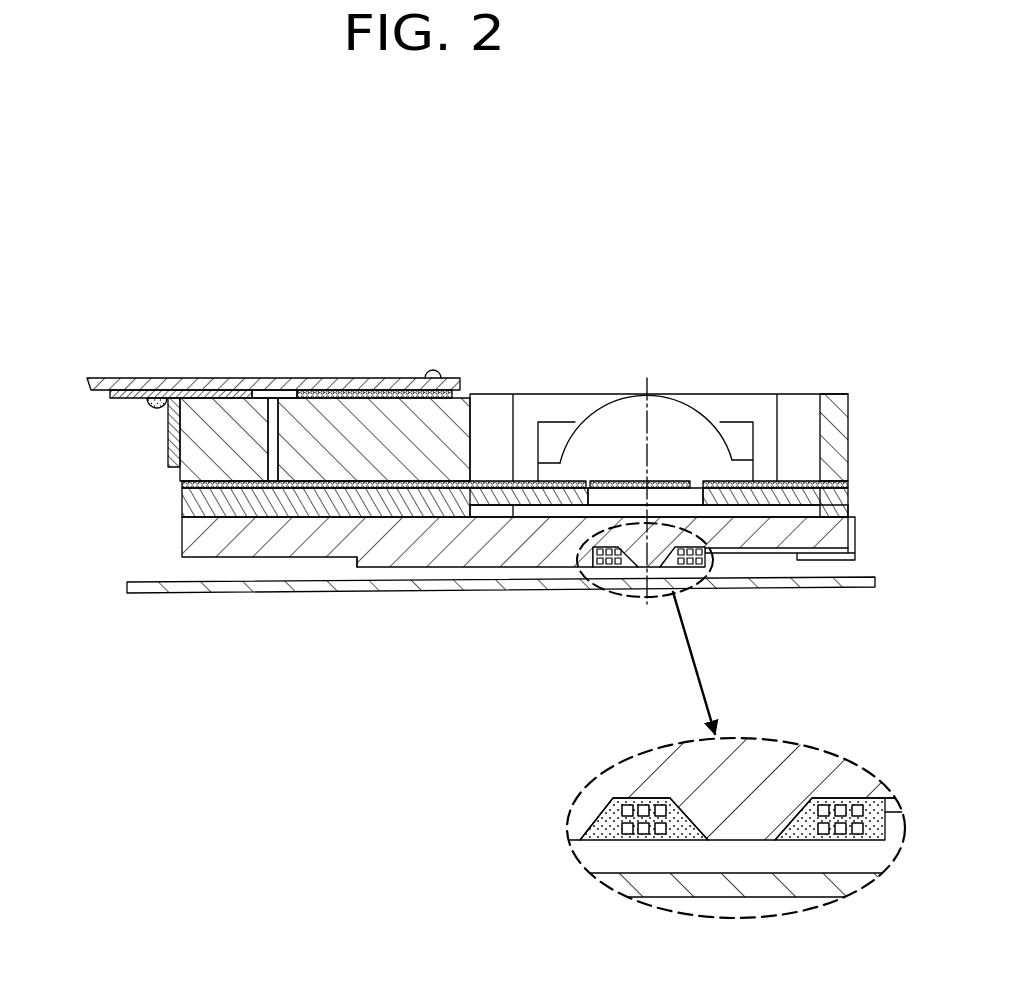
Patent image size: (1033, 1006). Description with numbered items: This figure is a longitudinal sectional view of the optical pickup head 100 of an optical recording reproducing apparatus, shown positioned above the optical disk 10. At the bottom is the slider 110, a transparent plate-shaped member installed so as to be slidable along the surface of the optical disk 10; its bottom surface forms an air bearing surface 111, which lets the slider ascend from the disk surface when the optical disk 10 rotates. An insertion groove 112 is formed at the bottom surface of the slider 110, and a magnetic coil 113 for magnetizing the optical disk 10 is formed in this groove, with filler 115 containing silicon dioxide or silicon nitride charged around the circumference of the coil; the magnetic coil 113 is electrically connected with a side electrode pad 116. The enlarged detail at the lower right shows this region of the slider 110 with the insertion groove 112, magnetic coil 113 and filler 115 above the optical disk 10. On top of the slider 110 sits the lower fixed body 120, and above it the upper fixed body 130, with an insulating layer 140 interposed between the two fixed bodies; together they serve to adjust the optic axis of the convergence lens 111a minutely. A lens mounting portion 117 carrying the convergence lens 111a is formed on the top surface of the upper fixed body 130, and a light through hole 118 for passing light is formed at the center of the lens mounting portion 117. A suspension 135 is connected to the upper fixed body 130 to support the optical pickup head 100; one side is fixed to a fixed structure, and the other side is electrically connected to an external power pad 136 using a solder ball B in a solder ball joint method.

The optical pickup head 100 is at (488, 250).
The optical disk 10 is at (390, 596).
The slider 110 is at (234, 552).
The air bearing surface 111 is at (356, 570).
The convergence lens 111a is at (684, 411).
The insertion groove 112 is at (589, 572).
The magnetic coil 113 is at (608, 572).
The filler 115 is at (665, 572).
The side electrode pad 116 is at (811, 561).
The lens mounting portion 117 is at (733, 432).
The light through hole 118 is at (690, 482).
The lower fixed body 120 is at (184, 511).
The upper fixed body 130 is at (196, 474).
The suspension 135 is at (132, 378).
The external power pad 136 is at (110, 397).
The insulating layer 140 is at (186, 492).
The solder ball B is at (147, 403).